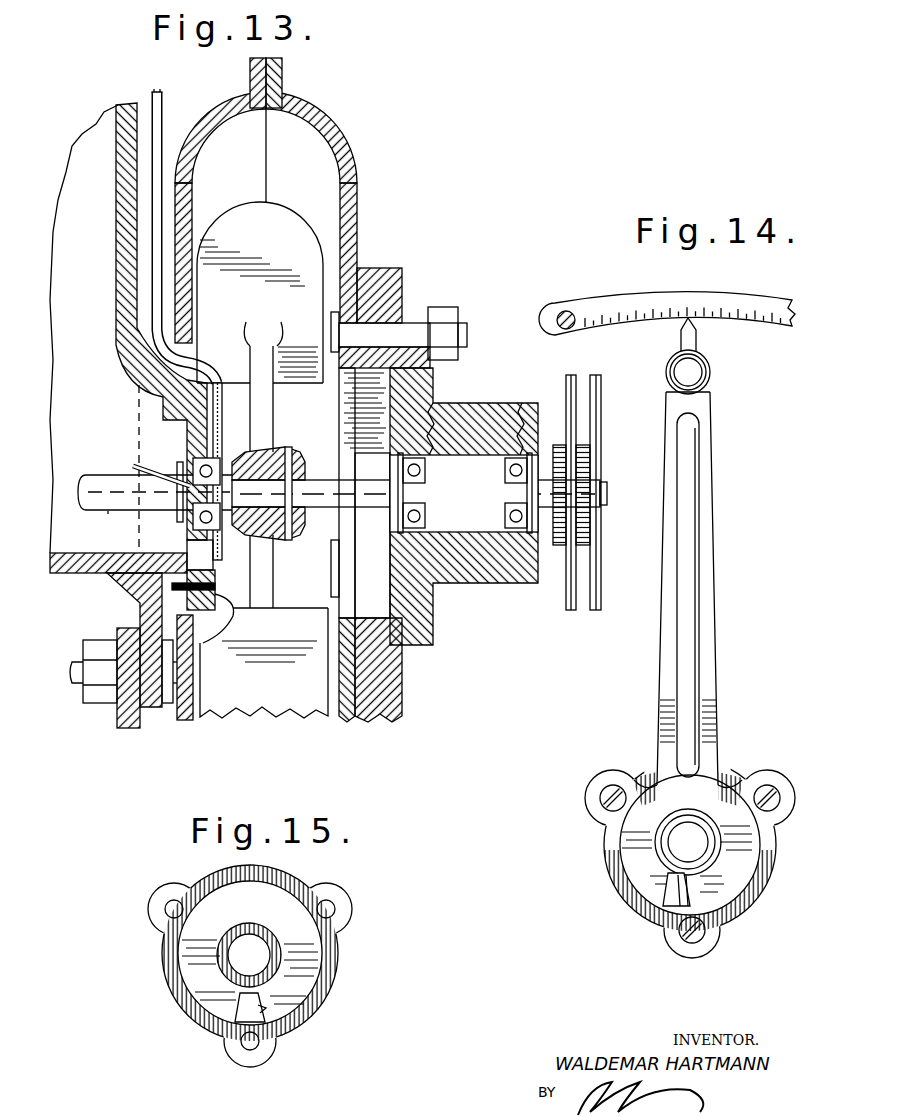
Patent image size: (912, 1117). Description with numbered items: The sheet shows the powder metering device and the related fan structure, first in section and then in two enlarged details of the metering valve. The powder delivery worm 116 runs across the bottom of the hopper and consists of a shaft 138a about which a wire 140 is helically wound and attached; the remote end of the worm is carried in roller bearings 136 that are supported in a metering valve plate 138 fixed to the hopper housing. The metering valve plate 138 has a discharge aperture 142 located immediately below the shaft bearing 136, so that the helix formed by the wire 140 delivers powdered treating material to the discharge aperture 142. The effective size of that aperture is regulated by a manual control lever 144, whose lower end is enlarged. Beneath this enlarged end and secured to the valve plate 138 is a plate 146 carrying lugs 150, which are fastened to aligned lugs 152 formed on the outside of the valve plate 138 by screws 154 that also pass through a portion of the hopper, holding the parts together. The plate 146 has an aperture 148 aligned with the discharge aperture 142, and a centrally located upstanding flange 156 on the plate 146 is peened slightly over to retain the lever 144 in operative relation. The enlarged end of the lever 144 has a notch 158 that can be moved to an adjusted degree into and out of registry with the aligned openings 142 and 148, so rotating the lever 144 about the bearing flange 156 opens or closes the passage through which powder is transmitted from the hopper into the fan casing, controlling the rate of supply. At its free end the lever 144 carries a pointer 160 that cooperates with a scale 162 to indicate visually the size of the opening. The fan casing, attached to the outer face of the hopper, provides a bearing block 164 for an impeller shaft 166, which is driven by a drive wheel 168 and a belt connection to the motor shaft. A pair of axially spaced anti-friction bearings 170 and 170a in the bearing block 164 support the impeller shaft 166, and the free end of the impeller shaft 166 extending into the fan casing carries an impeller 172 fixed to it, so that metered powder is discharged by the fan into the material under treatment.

In FIG. 13, the powder delivery worm 116 is at (100, 470).
In FIG. 13, the roller bearings 136 is at (206, 448).
In FIG. 13, the metering valve plate 138 is at (165, 418).
In FIG. 15, the metering valve plate 138 is at (305, 947).
In FIG. 13, the shaft 138a is at (108, 511).
In FIG. 13, the wire 140 is at (150, 512).
In FIG. 13, the discharge aperture 142 is at (197, 548).
In FIG. 15, the discharge aperture 142 is at (259, 1008).
In FIG. 13, the manual control lever 144 is at (157, 252).
In FIG. 14, the manual control lever 144 is at (707, 565).
In FIG. 13, the plate 146 is at (214, 430).
In FIG. 14, the plate 146 is at (606, 836).
In FIG. 14, the aperture 148 is at (660, 918).
In FIG. 14, the lugs 150 is at (608, 778).
In FIG. 13, the lugs 152 is at (212, 612).
In FIG. 15, the lugs 152 is at (333, 900).
In FIG. 13, the screws 154 is at (222, 600).
In FIG. 14, the screws 154 is at (686, 933).
In FIG. 13, the upstanding flange 156 is at (212, 540).
In FIG. 14, the upstanding flange 156 is at (658, 843).
In FIG. 14, the notch 158 is at (652, 892).
In FIG. 14, the pointer 160 is at (697, 336).
In FIG. 14, the scale 162 is at (633, 305).
In FIG. 13, the bearing block 164 is at (458, 408).
In FIG. 13, the impeller shaft 166 is at (323, 487).
In FIG. 13, the drive wheel 168 is at (583, 403).
In FIG. 13, the anti-friction bearing 170 is at (433, 403).
In FIG. 13, the anti-friction bearing 170a is at (530, 399).
In FIG. 13, the impeller 172 is at (274, 213).